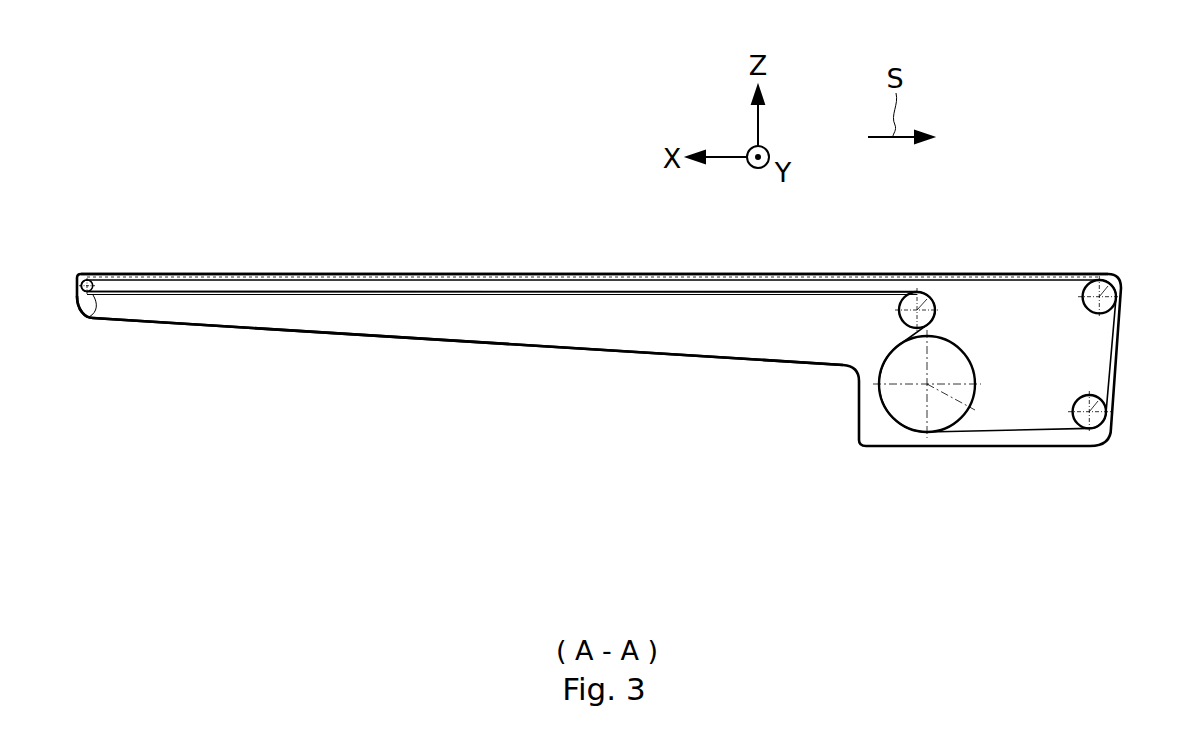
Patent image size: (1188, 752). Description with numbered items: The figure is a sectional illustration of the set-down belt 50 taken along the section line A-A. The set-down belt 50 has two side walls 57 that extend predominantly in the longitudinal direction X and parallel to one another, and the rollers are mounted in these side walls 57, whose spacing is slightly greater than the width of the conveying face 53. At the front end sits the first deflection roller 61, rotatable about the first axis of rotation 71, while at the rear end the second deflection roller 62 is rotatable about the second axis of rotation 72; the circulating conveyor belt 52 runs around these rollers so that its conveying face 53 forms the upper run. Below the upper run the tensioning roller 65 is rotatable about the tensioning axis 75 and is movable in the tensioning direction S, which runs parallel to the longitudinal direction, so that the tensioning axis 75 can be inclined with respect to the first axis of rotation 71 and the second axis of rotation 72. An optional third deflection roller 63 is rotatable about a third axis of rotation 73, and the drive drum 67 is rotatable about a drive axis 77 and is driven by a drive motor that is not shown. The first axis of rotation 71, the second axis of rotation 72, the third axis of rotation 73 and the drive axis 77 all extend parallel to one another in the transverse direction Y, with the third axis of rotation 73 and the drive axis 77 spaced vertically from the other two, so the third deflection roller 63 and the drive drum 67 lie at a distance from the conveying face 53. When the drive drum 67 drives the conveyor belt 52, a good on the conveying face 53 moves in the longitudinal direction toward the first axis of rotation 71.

The set-down belt 50 is at (1068, 170).
The conveyor belt 52 is at (522, 277).
The conveying face 53 is at (392, 276).
The side walls 57 is at (490, 330).
The first deflection roller 61 is at (89, 318).
The second deflection roller 62 is at (1084, 310).
The third deflection roller 63 is at (1078, 400).
The tensioning roller 65 is at (898, 322).
The drive drum 67 is at (963, 347).
The first axis of rotation 71 is at (77, 272).
The second axis of rotation 72 is at (1117, 275).
The third axis of rotation 73 is at (1115, 407).
The tensioning axis 75 is at (931, 291).
The drive axis 77 is at (977, 413).